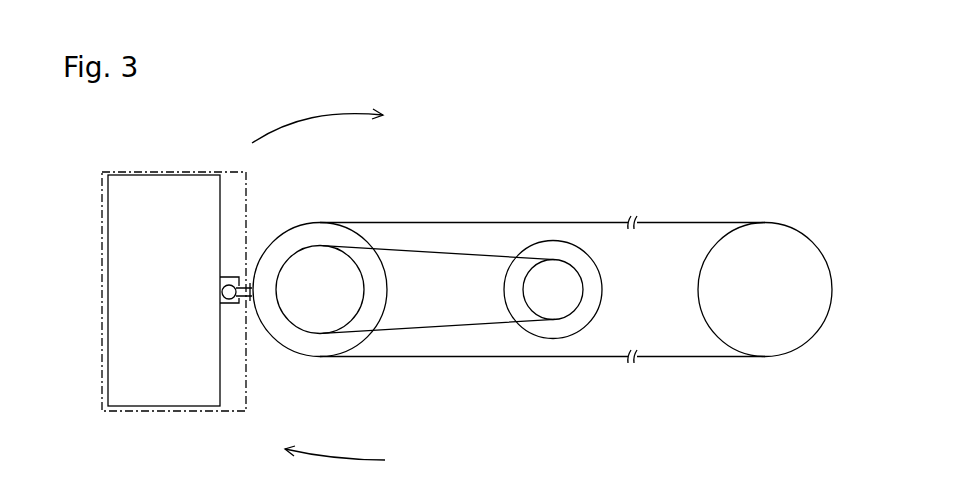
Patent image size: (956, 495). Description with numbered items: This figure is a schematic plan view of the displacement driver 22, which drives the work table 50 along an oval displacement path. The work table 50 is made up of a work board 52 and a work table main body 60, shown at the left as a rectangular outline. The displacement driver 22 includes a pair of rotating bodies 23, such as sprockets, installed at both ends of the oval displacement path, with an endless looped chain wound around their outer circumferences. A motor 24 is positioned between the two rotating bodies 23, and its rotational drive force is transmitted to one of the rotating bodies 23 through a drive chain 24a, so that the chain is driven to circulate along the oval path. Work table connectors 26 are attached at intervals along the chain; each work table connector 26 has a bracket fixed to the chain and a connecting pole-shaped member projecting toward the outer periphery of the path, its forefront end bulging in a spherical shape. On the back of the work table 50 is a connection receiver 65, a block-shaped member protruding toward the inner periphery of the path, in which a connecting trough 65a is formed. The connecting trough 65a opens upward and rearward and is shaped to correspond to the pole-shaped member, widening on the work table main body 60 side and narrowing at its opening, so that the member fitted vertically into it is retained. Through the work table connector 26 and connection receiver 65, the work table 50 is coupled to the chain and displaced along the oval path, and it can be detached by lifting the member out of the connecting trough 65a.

The displacement driver 22 is at (505, 197).
The rotating bodies 23 is at (362, 240).
The motor 24 is at (602, 305).
The drive chain 24a is at (447, 253).
The work table connector 26 is at (245, 282).
The work table 50 is at (174, 273).
The work board 52 is at (210, 172).
The work table main body 60 is at (220, 407).
The connection receiver 65 is at (228, 305).
The connecting trough 65a is at (222, 290).